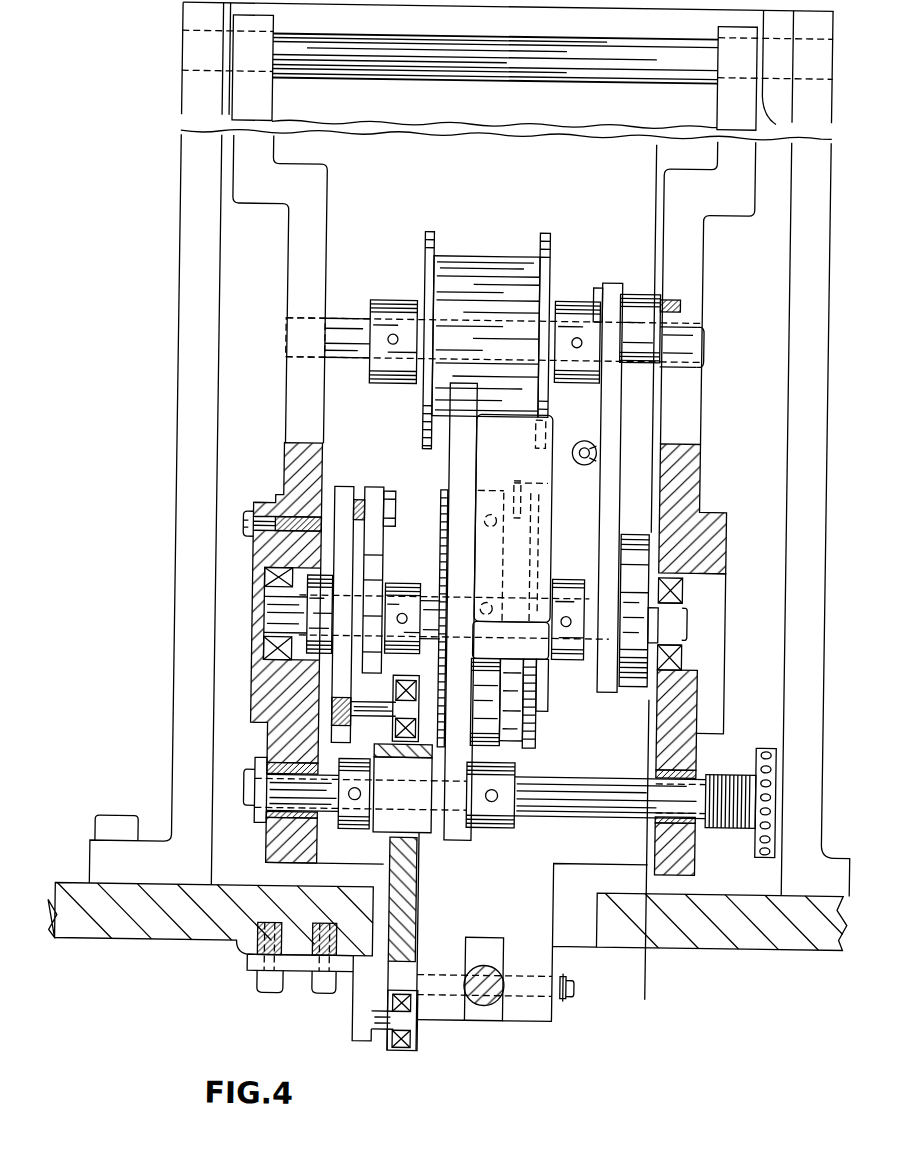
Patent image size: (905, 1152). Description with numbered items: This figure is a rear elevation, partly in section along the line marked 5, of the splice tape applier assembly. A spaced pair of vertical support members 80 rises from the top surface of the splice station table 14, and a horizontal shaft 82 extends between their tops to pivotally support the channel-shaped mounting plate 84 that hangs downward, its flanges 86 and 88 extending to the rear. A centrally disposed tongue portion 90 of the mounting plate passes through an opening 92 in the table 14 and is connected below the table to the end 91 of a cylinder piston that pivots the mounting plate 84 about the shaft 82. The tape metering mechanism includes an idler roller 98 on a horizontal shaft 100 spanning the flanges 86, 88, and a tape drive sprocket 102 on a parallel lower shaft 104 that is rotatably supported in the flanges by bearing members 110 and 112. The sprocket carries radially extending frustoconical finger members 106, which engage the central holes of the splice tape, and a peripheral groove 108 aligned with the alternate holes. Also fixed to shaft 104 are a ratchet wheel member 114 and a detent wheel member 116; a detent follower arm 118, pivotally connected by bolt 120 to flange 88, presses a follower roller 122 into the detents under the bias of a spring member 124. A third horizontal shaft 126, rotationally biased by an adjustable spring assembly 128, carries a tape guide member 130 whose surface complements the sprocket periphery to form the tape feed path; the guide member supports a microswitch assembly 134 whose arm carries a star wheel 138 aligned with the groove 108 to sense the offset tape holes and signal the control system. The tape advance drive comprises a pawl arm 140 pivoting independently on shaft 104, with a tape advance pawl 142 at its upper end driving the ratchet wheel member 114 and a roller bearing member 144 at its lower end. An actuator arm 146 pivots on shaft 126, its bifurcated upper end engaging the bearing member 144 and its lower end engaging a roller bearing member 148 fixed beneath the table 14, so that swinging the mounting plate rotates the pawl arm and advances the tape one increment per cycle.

The section line 5- 5 is at (652, 992).
The splice station table 14 is at (170, 934).
The vertical support members 80 is at (188, 474).
The horizontal shaft 82 is at (404, 62).
The splice applier assembly mounting plate 84 is at (496, 185).
The flange 86 is at (320, 205).
The flange 88 is at (685, 226).
The tongue portion 90 is at (478, 908).
The end of the piston 91 is at (490, 1008).
The opening 92 is at (602, 931).
The idler roller 98 is at (488, 268).
The horizontal shaft 100 is at (345, 318).
The tape drive sprocket 102 is at (441, 536).
The shaft 104 is at (588, 645).
The finger members 106 is at (478, 723).
The peripheral groove 108 is at (520, 740).
The bearing member 110 is at (253, 585).
The bearing member 112 is at (679, 589).
The ratchet wheel member 114 is at (376, 588).
The detent wheel member 116 is at (633, 533).
The detent follower arm 118 is at (602, 415).
The bolt 120 is at (626, 296).
The follower roller 122 is at (634, 623).
The spring member 124 is at (572, 450).
The third horizontal shaft 126 is at (588, 803).
The adjustable spring assembly 128 is at (726, 771).
The tape guide member 130 is at (452, 466).
The microswitch assembly 134 is at (492, 469).
The star wheel 138 is at (539, 483).
The pawl arm 140 is at (333, 487).
The tape advance pawl 142 is at (373, 487).
The roller bearing member 144 is at (421, 679).
The actuator arm 146 is at (412, 860).
The roller bearing member 148 is at (420, 1041).